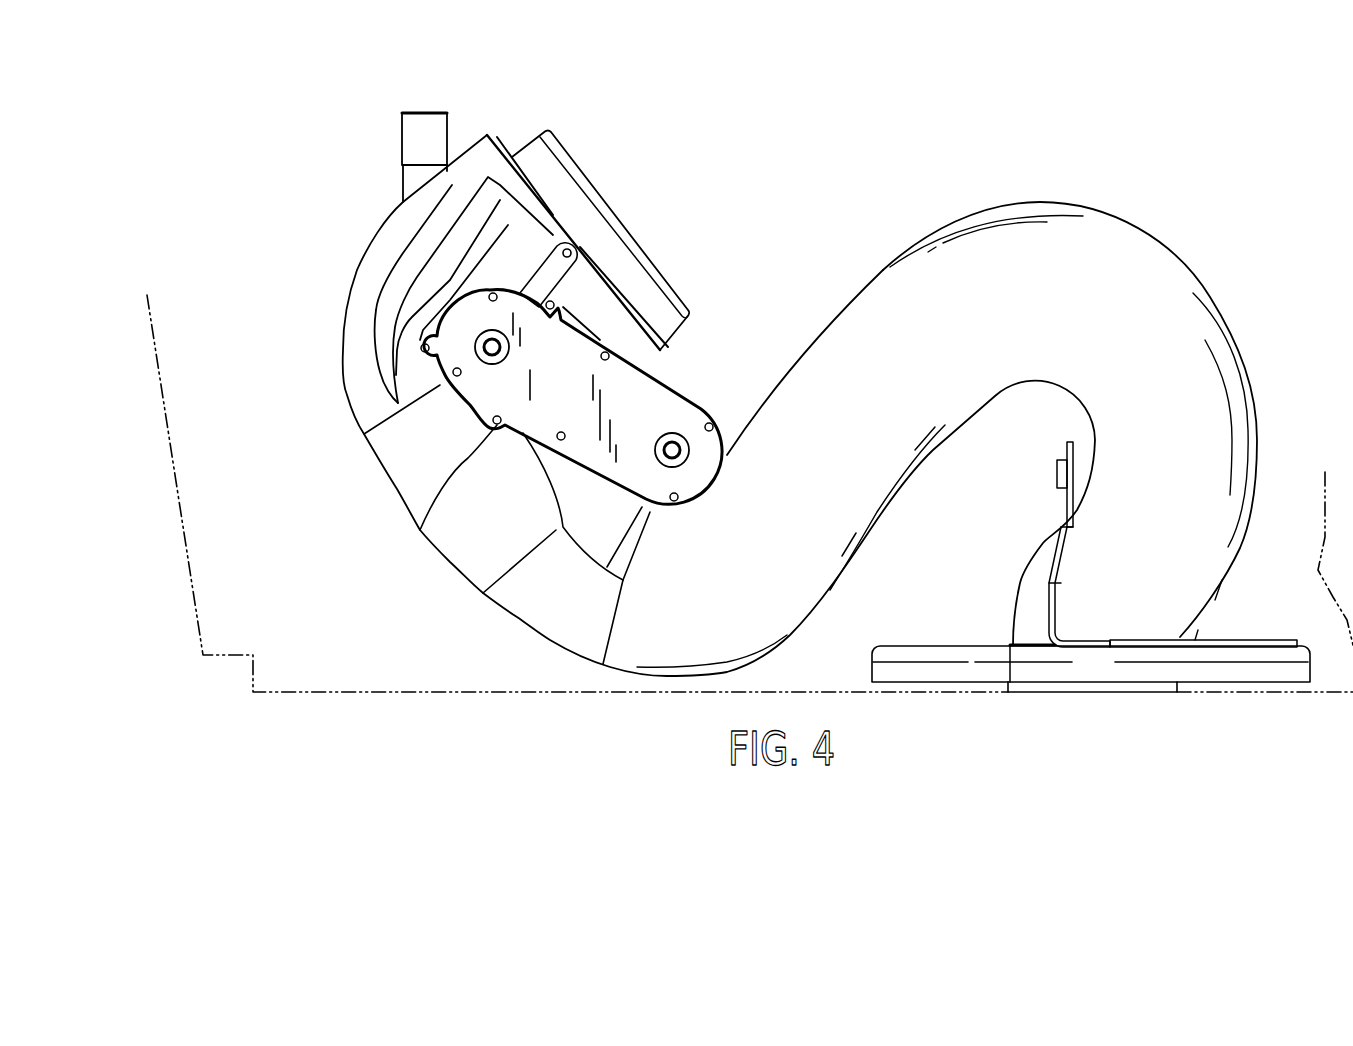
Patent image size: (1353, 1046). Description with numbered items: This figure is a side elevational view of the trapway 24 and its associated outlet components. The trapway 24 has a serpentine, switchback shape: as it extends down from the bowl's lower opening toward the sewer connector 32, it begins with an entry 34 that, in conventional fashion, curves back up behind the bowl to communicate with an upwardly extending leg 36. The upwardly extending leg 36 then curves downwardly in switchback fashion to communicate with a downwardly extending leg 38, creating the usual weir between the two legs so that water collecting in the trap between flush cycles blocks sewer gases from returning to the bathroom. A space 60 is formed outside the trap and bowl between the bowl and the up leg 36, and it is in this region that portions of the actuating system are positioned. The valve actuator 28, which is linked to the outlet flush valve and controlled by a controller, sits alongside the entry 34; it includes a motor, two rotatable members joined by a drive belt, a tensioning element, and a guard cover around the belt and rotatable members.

The trapway 24 is at (808, 338).
The valve actuator 28 is at (660, 413).
The sewer connector 32 is at (1090, 665).
The entry 34 is at (378, 439).
The upwardly extending leg 36 is at (850, 523).
The downwardly extending leg 38 is at (1200, 552).
The space 60 is at (740, 397).